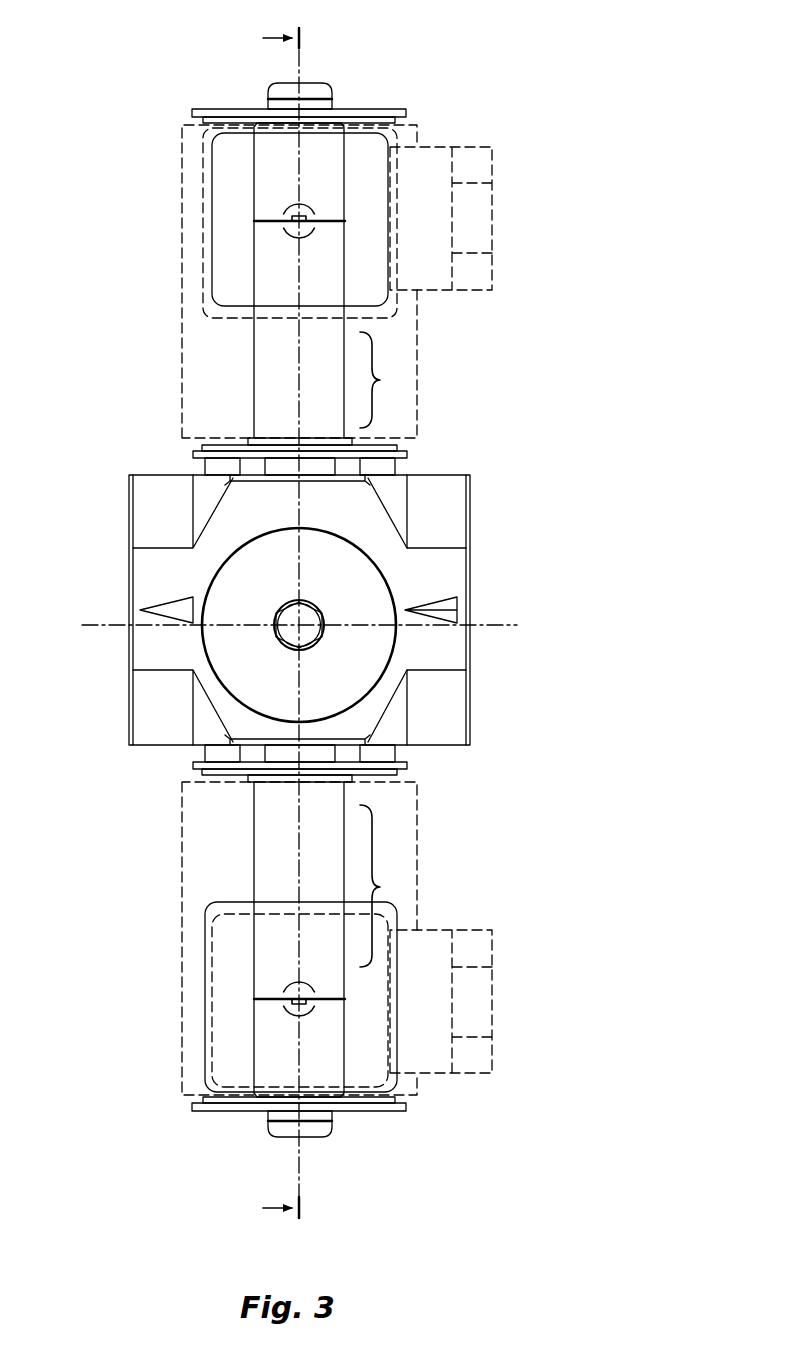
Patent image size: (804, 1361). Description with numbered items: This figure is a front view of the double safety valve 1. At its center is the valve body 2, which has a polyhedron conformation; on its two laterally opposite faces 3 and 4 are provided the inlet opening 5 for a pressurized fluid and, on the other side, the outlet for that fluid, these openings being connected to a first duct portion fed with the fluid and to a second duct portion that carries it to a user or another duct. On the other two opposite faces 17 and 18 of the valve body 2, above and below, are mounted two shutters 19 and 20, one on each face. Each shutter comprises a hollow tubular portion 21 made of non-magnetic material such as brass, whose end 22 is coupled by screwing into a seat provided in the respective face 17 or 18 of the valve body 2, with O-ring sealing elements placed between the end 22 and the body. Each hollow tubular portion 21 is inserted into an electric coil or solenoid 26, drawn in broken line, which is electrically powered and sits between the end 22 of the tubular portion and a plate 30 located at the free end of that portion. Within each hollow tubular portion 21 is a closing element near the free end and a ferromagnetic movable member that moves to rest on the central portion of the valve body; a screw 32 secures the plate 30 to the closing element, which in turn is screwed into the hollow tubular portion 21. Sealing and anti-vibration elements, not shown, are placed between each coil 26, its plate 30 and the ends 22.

The double safety valve 1 is at (504, 68).
The valve body 2 is at (473, 440).
The face 3 is at (130, 705).
The face 4 is at (470, 710).
The inlet opening 5 is at (269, 624).
The face 17 is at (140, 475).
The face 18 is at (156, 745).
The shutter 19 is at (380, 380).
The shutter 20 is at (380, 887).
The hollow tubular portion 21 is at (246, 367).
The end 22 is at (392, 470).
The electric coil or solenoid 26 is at (182, 190).
The plate 30 is at (378, 108).
The screw 32 is at (311, 89).